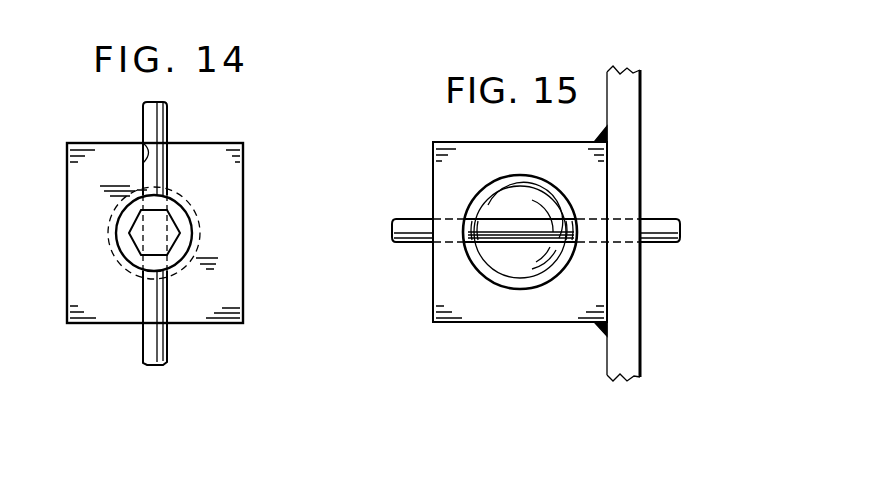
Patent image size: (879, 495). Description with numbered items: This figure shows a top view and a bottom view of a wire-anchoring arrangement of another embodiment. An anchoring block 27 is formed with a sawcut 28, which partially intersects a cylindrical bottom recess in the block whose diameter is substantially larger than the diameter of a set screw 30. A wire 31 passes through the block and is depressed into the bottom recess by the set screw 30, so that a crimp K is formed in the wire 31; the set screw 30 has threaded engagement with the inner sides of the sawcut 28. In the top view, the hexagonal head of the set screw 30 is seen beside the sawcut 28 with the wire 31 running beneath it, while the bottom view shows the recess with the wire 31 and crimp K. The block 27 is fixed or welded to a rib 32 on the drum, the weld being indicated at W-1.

In FIG. 14, the anchoring block 27 is at (243, 168).
In FIG. 14, the sawcut 28 is at (143, 144).
In FIG. 14, the set screw 30 is at (172, 255).
In FIG. 15, the set screw 30 is at (517, 257).
In FIG. 14, the wire 31 is at (153, 128).
In FIG. 15, the wire 31 is at (662, 233).
In FIG. 15, the rib 32 is at (628, 288).
In FIG. 15, the weld W-1 is at (600, 328).
In FIG. 15, the crimp K is at (508, 232).